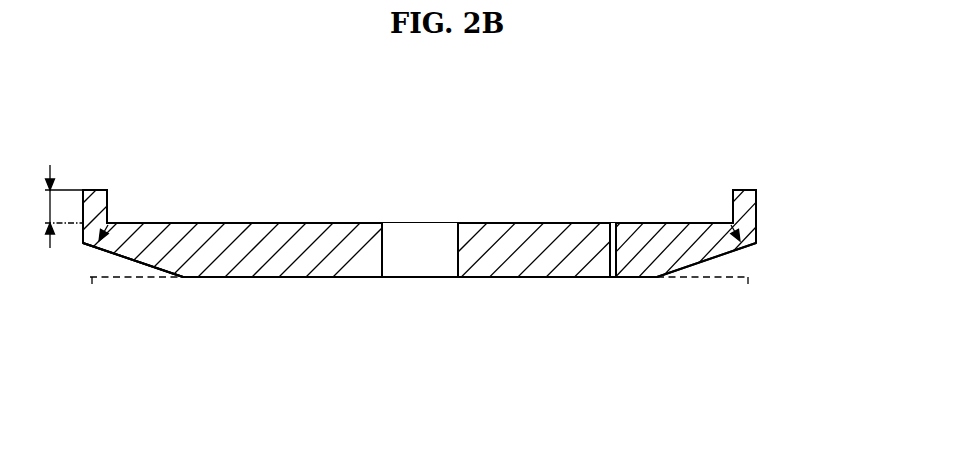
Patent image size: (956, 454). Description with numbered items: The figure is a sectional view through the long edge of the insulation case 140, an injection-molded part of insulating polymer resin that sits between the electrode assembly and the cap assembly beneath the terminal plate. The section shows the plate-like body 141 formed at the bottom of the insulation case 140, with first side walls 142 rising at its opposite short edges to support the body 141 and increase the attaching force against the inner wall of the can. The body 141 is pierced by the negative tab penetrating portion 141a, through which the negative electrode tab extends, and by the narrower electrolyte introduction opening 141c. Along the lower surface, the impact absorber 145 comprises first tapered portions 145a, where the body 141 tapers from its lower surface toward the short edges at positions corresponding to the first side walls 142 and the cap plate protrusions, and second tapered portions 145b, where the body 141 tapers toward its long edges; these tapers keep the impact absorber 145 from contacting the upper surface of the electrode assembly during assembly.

The insulation case 140 is at (27, 122).
The body 141 is at (522, 270).
The negative tab penetrating portion 141a is at (420, 230).
The electrolyte introduction opening 141c is at (612, 222).
The first side walls 142 is at (747, 203).
The impact absorber 145 is at (213, 342).
The first tapered portions 145a is at (128, 272).
The second tapered portions 145b is at (250, 286).